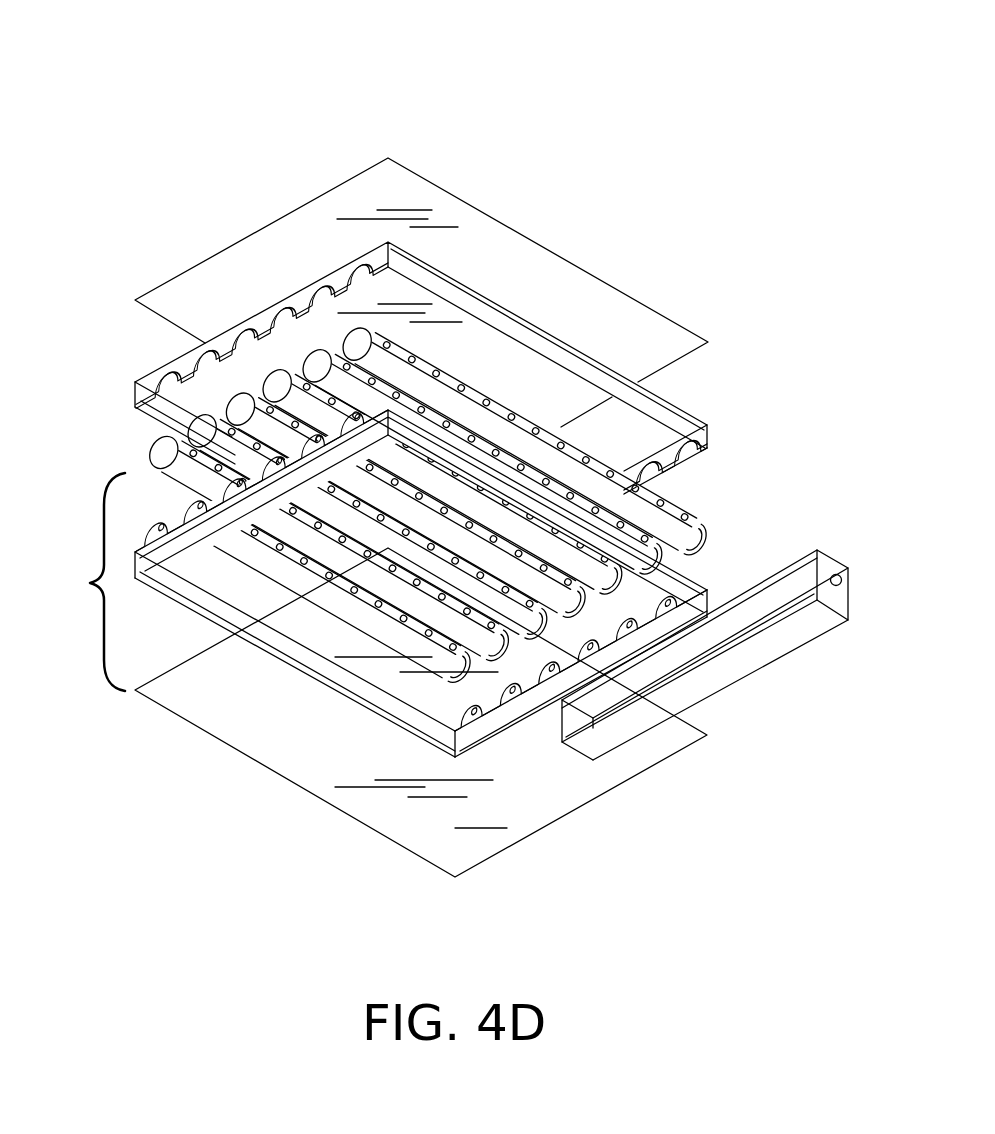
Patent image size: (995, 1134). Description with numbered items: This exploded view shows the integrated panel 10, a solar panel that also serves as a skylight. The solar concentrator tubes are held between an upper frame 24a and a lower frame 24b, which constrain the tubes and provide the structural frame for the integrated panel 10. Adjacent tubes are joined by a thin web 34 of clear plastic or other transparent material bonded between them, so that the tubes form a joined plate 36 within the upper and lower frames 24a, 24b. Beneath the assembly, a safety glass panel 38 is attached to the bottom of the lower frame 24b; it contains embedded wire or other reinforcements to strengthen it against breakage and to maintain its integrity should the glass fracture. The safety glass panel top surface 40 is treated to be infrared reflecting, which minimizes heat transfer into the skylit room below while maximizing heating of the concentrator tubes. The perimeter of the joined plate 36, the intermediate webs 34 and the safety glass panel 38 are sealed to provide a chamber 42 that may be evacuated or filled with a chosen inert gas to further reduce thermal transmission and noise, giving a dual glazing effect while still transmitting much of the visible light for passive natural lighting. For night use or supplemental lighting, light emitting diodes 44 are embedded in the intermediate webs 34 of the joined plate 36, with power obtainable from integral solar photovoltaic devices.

The integrated panel 10 is at (470, 158).
The safety glass panel top surface 40 is at (597, 303).
The upper frame 24a is at (698, 427).
The lower frame 24b is at (693, 593).
The joined plate 36 is at (650, 482).
The thin web 34 is at (200, 462).
The light emitting diodes 44 is at (703, 527).
The safety glass panel 38 is at (592, 773).
The chamber 42 is at (81, 582).